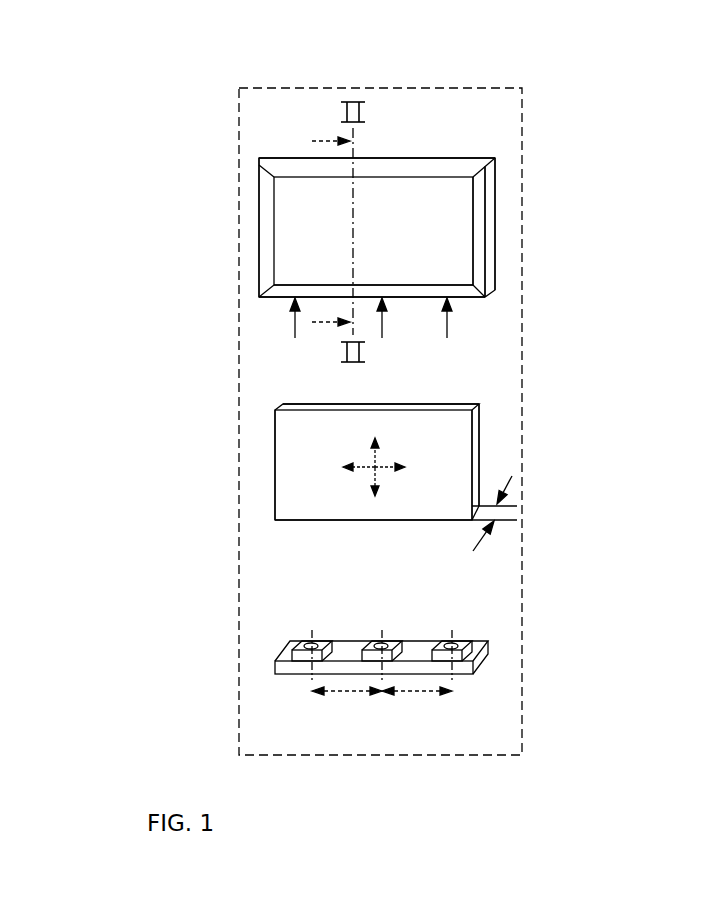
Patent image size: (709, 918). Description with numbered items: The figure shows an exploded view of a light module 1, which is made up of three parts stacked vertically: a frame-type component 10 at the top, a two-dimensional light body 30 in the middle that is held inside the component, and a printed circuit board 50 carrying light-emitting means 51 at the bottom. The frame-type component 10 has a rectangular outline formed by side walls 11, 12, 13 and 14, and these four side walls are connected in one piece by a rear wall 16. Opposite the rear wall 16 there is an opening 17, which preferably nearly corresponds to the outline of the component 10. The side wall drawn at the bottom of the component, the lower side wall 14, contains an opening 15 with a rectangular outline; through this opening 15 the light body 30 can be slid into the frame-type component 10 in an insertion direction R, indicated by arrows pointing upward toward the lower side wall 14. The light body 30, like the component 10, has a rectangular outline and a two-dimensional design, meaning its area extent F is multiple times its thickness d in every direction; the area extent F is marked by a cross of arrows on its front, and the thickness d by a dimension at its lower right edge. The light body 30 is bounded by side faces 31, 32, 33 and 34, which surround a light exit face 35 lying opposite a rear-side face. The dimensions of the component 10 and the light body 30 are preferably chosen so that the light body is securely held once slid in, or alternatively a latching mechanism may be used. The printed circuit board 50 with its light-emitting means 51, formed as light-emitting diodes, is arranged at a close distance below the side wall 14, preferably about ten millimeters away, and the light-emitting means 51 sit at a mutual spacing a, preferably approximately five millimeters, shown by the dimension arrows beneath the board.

The light module 1 is at (533, 127).
The frame-type component 10 is at (383, 206).
The side wall 11 is at (383, 166).
The side wall 12 is at (488, 198).
The side wall 13 is at (260, 232).
The lower side wall 14 is at (410, 298).
The opening 15 is at (473, 318).
The rear wall 16 is at (293, 193).
The opening 17 is at (430, 231).
The two-dimensional light body 30 is at (383, 458).
The side face 31 is at (466, 409).
The side face 32 is at (477, 474).
The side face 33 is at (275, 454).
The side face 34 is at (357, 521).
The light exit face 35 is at (333, 478).
The printed circuit board 50 is at (382, 683).
The light-emitting means 51 is at (297, 647).
The insertion direction R is at (294, 324).
The area extent F is at (375, 477).
The thickness d is at (496, 514).
The mutual spacing a is at (415, 693).